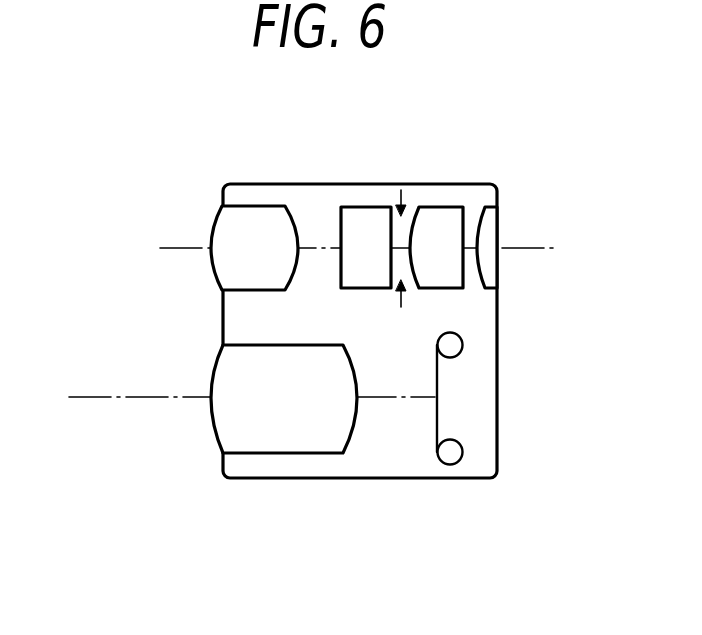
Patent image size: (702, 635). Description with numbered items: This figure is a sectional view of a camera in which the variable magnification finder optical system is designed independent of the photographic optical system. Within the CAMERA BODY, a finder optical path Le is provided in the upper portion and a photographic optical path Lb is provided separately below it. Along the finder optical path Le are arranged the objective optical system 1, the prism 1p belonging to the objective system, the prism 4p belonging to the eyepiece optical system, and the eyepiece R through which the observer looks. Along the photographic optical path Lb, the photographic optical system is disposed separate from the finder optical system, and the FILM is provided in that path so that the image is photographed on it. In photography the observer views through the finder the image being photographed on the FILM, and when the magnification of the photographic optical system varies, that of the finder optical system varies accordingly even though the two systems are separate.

The objective optical system 1 is at (249, 215).
The prism 1p is at (362, 215).
The prism 4p is at (436, 215).
The eyepiece R is at (483, 205).
The finder optical path Le is at (538, 246).
The photographic optical path Lb is at (108, 397).
The film FILM is at (438, 377).
The camera body CAMERA BODY is at (358, 480).